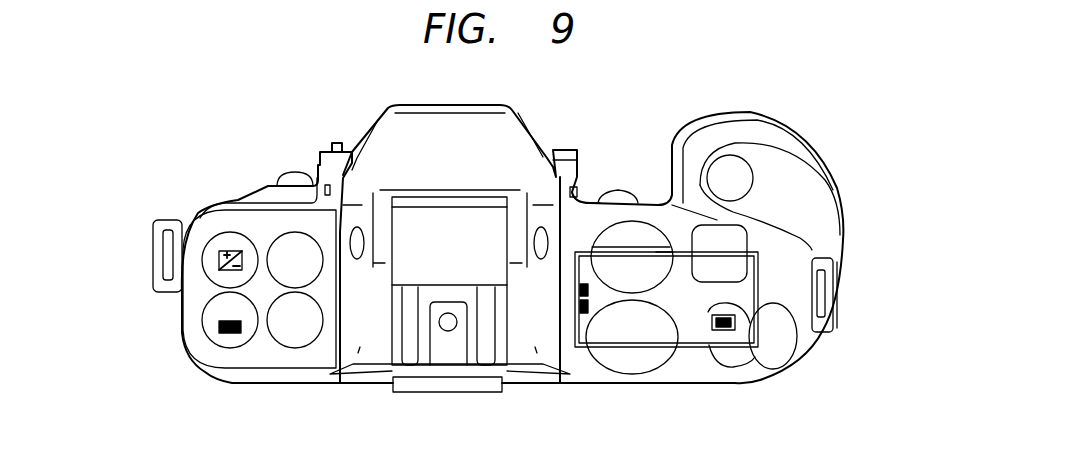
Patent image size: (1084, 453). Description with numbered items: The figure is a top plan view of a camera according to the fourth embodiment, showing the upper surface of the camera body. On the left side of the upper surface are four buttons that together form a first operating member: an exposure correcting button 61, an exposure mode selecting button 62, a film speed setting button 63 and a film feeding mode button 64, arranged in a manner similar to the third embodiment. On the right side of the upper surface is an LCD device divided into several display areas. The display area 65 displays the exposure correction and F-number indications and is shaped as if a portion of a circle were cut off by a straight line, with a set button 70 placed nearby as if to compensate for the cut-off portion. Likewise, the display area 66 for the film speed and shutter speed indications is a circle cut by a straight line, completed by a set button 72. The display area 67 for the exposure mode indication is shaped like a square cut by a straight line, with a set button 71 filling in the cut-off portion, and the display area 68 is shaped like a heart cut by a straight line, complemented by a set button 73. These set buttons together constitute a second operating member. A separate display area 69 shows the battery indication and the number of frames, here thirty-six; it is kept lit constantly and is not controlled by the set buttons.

The exposure correcting button 61 is at (212, 244).
The exposure mode selecting button 62 is at (293, 236).
The film speed setting button 63 is at (218, 348).
The film feeding mode button 64 is at (272, 348).
The display area 65 is at (585, 203).
The display area 66 is at (598, 336).
The display area 67 is at (740, 273).
The display area 68 is at (733, 340).
The display area 69 is at (678, 260).
The set button 70 is at (622, 237).
The set button 71 is at (740, 238).
The set button 72 is at (633, 374).
The set button 73 is at (758, 360).